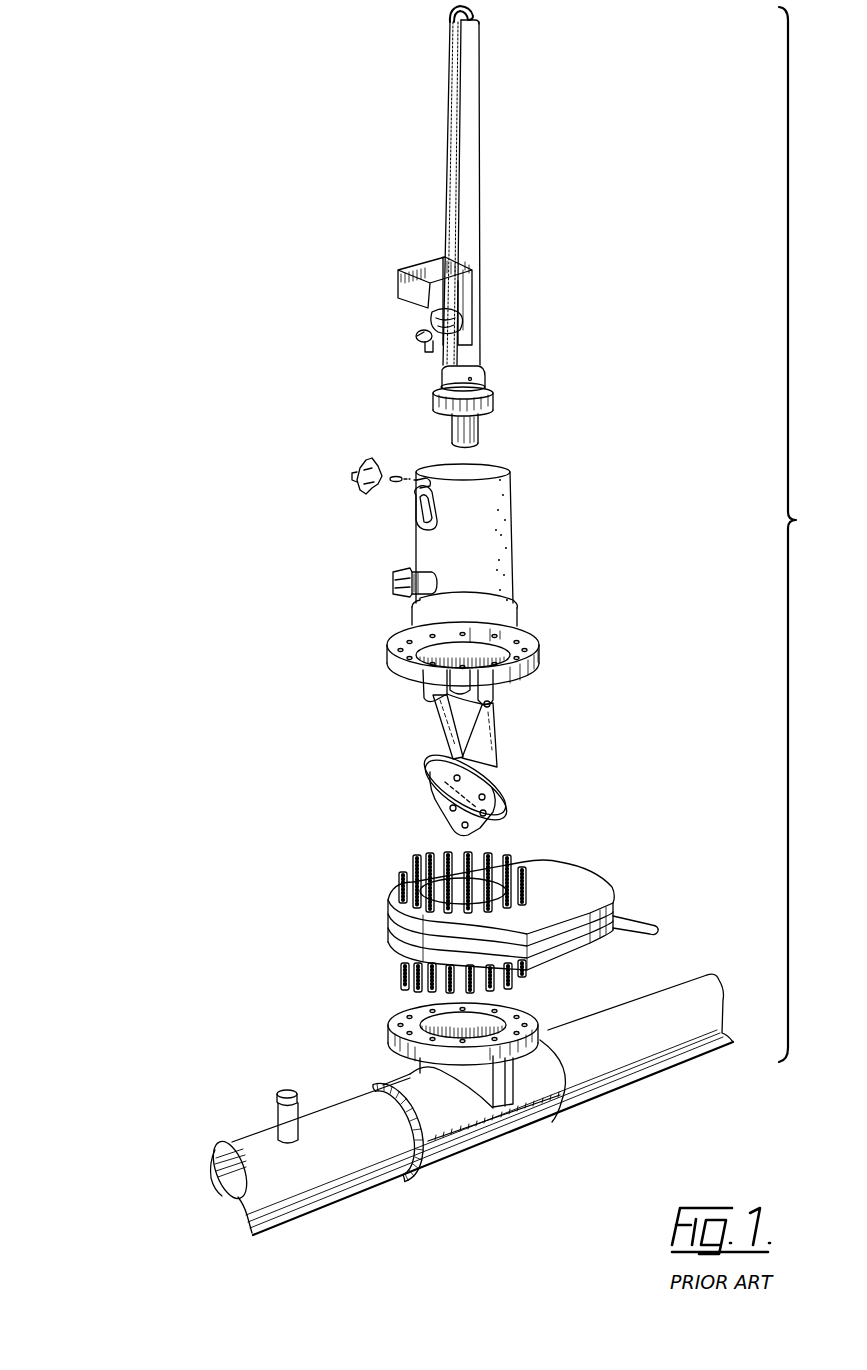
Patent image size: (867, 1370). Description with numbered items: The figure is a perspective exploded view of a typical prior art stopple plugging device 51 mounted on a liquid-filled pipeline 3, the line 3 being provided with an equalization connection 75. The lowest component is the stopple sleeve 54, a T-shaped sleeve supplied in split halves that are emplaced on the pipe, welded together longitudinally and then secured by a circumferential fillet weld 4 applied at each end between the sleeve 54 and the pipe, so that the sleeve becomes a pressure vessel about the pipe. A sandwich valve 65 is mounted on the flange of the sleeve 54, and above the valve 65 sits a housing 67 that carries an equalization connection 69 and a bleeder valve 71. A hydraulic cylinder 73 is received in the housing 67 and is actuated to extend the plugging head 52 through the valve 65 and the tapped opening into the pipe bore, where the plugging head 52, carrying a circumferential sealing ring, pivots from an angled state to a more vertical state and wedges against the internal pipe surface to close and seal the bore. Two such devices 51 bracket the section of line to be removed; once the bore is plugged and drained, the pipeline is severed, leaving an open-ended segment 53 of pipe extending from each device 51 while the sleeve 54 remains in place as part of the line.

The pipeline 3 is at (277, 1227).
The circumferential fillet weld 4 is at (426, 1176).
The stopple plugging device 51 is at (533, 497).
The plugging head 52 is at (493, 748).
The open-ended segment of pipe 53 is at (687, 987).
The stopple sleeve 54 is at (510, 1132).
The sandwich valve 65 is at (557, 862).
The housing 67 is at (513, 545).
The equalization connection 69 is at (402, 577).
The bleeder valve 71 is at (358, 467).
The hydraulic cylinder 73 is at (480, 162).
The equalization connection 75 is at (280, 1110).